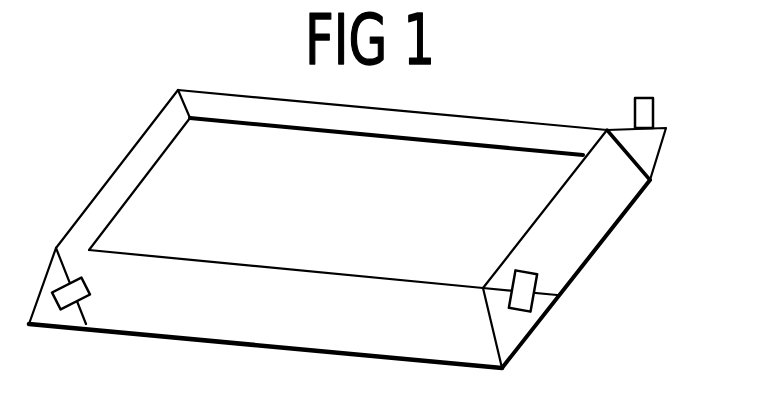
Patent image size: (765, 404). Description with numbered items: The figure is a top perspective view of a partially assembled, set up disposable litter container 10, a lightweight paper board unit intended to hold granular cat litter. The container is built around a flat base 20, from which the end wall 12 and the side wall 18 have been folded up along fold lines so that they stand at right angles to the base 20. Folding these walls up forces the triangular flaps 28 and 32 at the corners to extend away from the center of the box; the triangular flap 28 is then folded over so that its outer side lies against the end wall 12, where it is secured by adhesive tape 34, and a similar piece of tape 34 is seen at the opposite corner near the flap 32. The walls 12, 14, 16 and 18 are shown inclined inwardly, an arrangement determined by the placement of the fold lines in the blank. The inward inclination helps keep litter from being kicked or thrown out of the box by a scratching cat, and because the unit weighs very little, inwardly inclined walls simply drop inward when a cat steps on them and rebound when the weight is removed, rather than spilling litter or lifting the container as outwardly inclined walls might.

The disposable litter container 10 is at (136, 127).
The end wall 12 is at (119, 167).
The wall 14 is at (265, 308).
The wall 16 is at (603, 229).
The side wall 18 is at (518, 127).
The base 20 is at (348, 209).
The triangular flap 28 is at (518, 333).
The triangular flap 32 is at (651, 152).
The adhesive tape 34 is at (651, 97).